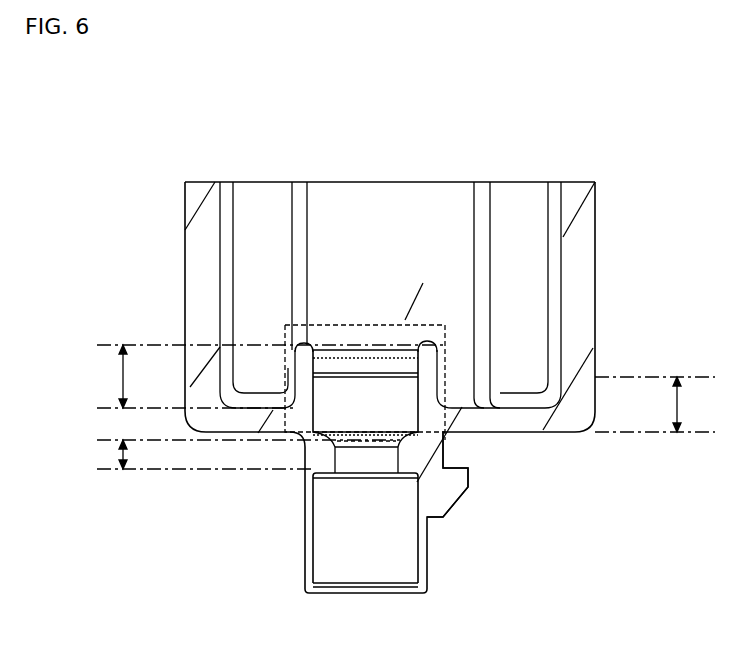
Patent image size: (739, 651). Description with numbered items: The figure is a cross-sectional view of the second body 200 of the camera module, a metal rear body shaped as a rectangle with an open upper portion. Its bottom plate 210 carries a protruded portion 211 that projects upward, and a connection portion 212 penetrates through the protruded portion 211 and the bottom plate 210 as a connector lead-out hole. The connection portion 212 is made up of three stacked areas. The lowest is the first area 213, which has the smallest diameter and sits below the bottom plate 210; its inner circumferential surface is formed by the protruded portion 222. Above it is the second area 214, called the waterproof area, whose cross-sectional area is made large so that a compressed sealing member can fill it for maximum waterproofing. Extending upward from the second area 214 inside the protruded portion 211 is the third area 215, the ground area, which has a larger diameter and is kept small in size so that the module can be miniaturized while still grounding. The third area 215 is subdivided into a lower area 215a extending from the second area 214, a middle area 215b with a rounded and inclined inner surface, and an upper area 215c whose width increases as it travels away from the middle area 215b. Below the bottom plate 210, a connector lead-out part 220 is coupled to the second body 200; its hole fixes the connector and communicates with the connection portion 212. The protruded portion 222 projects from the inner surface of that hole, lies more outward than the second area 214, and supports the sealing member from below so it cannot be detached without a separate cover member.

The second body 200 is at (98, 104).
The bottom plate 210 is at (195, 273).
The protruded portion 211 is at (300, 376).
The connection portion 212 is at (445, 433).
The first area 213 is at (373, 455).
The second area 214 is at (419, 436).
The third area 215 is at (365, 360).
The lower area 215a is at (418, 376).
The middle area 215b is at (418, 362).
The upper area 215c is at (418, 347).
The connector lead-out part 220 is at (340, 542).
The protruded portion 222 is at (323, 455).